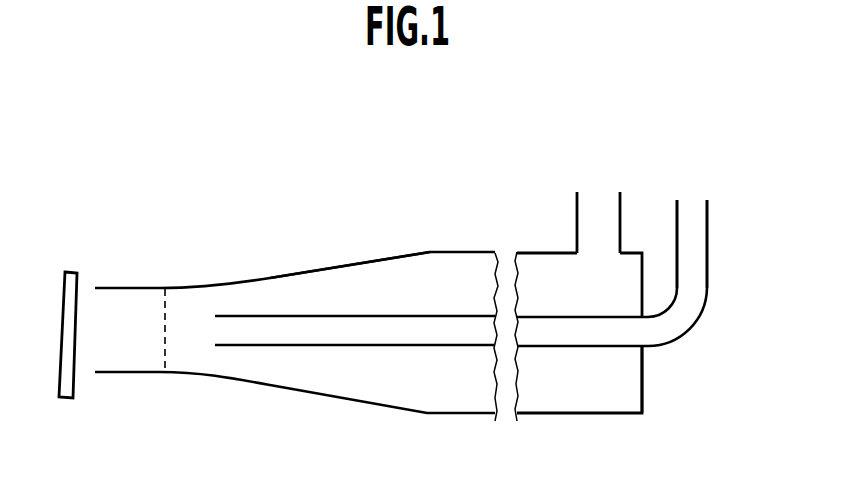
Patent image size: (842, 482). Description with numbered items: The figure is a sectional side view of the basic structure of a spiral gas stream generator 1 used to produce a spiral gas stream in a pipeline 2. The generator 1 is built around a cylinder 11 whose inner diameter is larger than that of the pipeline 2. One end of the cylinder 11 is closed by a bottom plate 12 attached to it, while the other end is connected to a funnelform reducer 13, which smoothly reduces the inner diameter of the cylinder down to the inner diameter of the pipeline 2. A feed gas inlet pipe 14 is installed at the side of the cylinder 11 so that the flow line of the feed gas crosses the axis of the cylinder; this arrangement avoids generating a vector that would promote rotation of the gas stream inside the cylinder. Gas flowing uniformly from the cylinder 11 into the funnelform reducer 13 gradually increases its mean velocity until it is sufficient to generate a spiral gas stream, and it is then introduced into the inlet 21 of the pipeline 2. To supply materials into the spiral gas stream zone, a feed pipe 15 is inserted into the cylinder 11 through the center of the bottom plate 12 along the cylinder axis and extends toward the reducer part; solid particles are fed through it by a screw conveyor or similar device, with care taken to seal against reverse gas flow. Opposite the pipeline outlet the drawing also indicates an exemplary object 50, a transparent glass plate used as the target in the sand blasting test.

The spiral gas stream generator 1 is at (408, 248).
The pipeline 2 is at (137, 287).
The cylinder 11 is at (543, 416).
The bottom plate 12 is at (643, 397).
The funnelform reducer 13 is at (355, 260).
The feed gas inlet pipe 14 is at (577, 200).
The feed pipe 15 is at (678, 243).
The inlet 21 is at (162, 376).
The object 50 is at (72, 263).